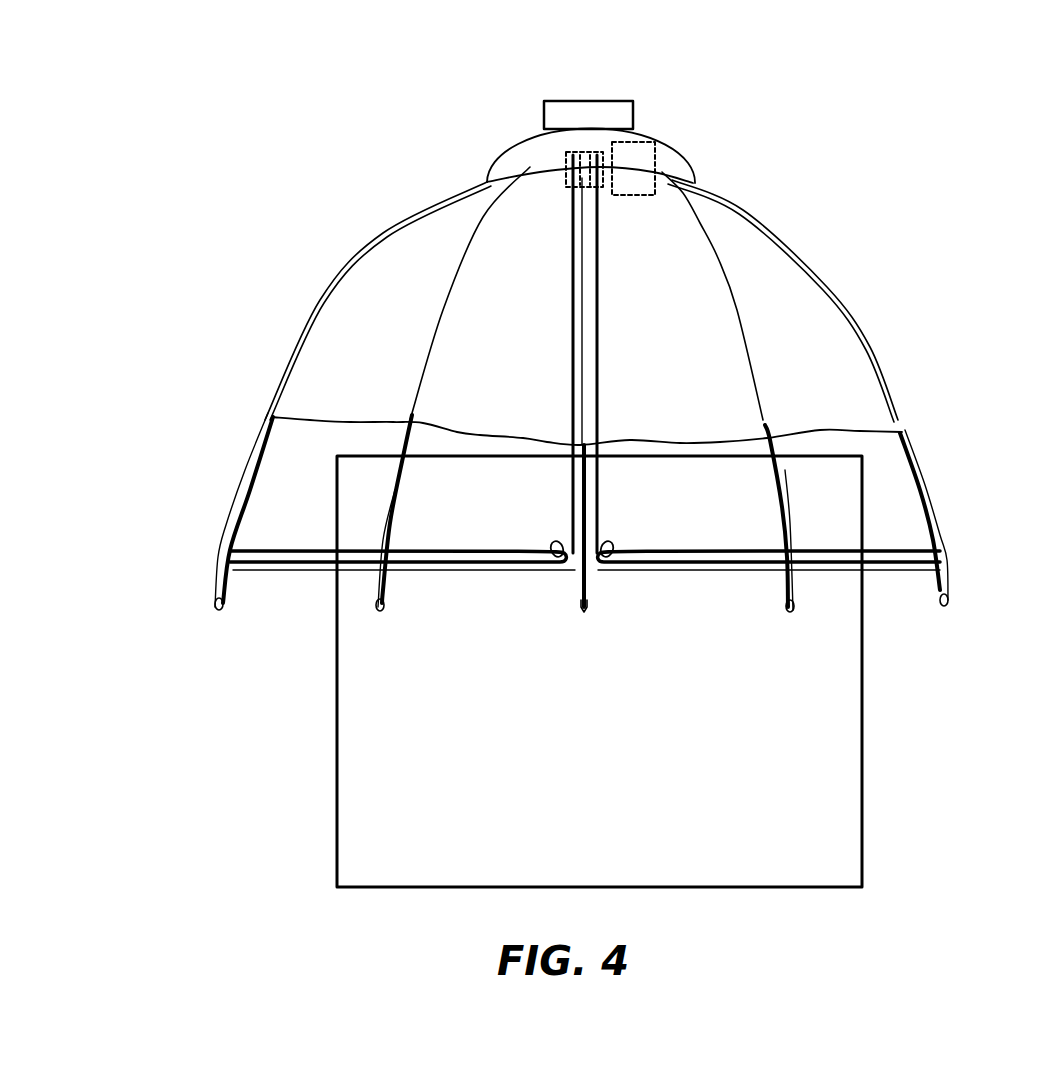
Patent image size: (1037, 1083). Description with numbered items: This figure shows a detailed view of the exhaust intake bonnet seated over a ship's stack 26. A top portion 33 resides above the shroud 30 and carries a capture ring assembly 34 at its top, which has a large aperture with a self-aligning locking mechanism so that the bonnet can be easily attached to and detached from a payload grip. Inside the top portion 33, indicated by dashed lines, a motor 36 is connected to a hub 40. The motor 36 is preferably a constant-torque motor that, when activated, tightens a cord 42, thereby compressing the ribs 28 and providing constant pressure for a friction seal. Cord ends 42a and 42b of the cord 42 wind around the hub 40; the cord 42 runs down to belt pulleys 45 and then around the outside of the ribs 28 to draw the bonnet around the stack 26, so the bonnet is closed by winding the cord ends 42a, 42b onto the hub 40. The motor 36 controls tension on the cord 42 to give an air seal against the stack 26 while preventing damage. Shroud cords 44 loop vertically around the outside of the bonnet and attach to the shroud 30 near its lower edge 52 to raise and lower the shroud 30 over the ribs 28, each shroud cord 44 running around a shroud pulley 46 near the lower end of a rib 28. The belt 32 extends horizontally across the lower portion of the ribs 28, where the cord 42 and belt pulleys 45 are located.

The stack 26 is at (350, 740).
The ribs 28 is at (240, 522).
The shroud 30 is at (403, 273).
The belt 32 is at (523, 562).
The top portion 33 is at (517, 158).
The capture ring assembly 34 is at (543, 113).
The motor 36 is at (640, 157).
The hub 40 is at (590, 150).
The cord 42 is at (598, 365).
The cord end 42a is at (603, 204).
The cord end 42b is at (583, 216).
The shroud cords 44 is at (320, 300).
The belt pulleys 45 is at (552, 543).
The shroud pulley 46 is at (218, 607).
The lower edge 52 is at (650, 437).